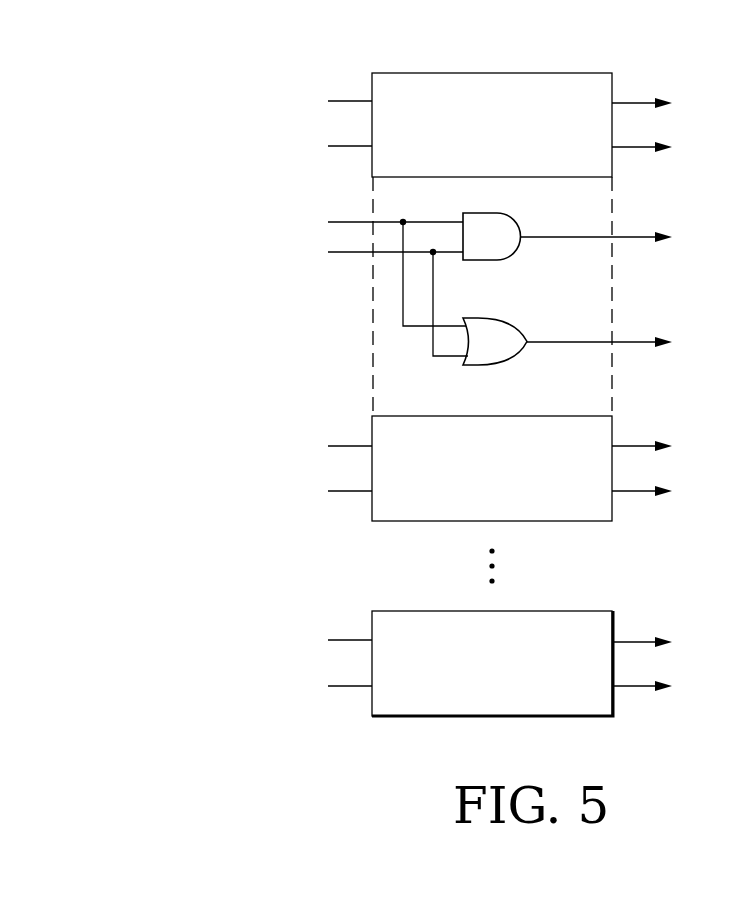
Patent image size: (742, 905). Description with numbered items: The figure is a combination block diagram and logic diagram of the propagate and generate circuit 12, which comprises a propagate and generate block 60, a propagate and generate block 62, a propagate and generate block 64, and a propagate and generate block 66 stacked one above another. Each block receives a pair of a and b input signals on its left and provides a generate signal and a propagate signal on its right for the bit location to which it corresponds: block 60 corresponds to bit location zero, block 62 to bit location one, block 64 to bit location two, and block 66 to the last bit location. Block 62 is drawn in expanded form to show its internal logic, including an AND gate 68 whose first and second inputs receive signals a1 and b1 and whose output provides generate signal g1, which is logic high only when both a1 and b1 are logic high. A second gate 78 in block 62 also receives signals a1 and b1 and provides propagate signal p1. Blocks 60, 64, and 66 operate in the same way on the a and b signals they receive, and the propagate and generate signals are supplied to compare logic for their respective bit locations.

The propagate and generate circuit 12 is at (275, 58).
The propagate and generate block 60 is at (552, 146).
The propagate and generate block 62 is at (332, 327).
The propagate and generate block 64 is at (552, 490).
The propagate and generate block 66 is at (552, 685).
The AND gate 68 is at (488, 261).
The OR gate 78 is at (488, 366).